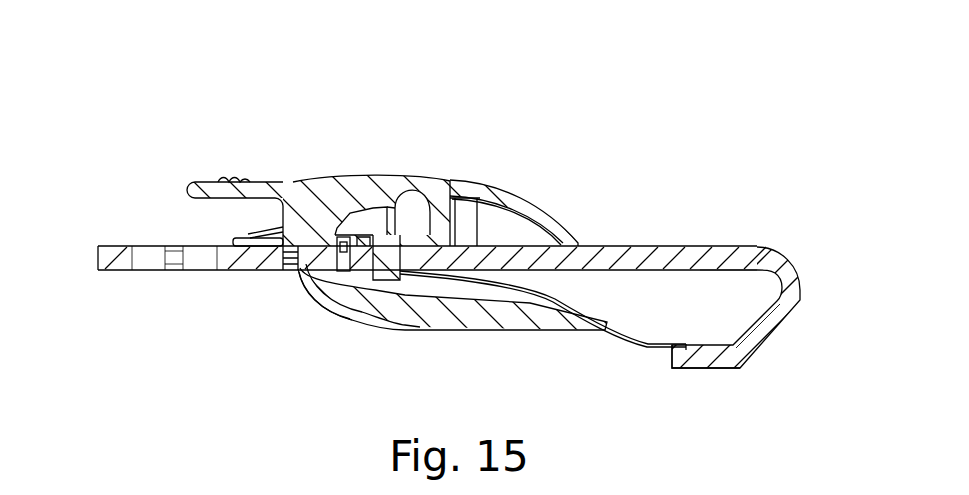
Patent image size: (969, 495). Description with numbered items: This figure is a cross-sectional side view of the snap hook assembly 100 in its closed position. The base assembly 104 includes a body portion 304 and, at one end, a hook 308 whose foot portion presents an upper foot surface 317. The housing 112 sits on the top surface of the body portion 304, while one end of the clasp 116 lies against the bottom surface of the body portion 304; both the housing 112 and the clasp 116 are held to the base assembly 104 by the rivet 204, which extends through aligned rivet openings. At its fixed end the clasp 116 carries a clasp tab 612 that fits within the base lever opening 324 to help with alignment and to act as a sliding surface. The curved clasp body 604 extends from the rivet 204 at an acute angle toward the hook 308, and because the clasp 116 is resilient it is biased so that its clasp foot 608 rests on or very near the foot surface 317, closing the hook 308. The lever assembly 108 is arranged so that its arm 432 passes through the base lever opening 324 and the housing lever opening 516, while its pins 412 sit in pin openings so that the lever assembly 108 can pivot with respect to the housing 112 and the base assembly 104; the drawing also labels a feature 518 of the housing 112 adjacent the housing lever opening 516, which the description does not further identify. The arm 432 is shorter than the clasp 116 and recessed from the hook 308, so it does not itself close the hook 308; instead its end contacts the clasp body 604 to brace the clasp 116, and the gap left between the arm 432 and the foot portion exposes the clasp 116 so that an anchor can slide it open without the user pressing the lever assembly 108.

The snap hook assembly 100 is at (74, 213).
The base assembly 104 is at (822, 254).
The lever assembly 108 is at (353, 162).
The housing 112 is at (527, 172).
The clasp 116 is at (603, 293).
The rivet 204 is at (387, 262).
The body portion 304 is at (697, 253).
The hook 308 is at (767, 330).
The foot surface 317 is at (702, 347).
The base lever opening 324 is at (289, 287).
The pins 412 is at (413, 192).
The arm 432 is at (532, 320).
The housing lever opening 516 is at (293, 240).
The slot 518 is at (338, 252).
The clasp body 604 is at (633, 328).
The clasp foot 608 is at (669, 348).
The clasp tab 612 is at (350, 262).